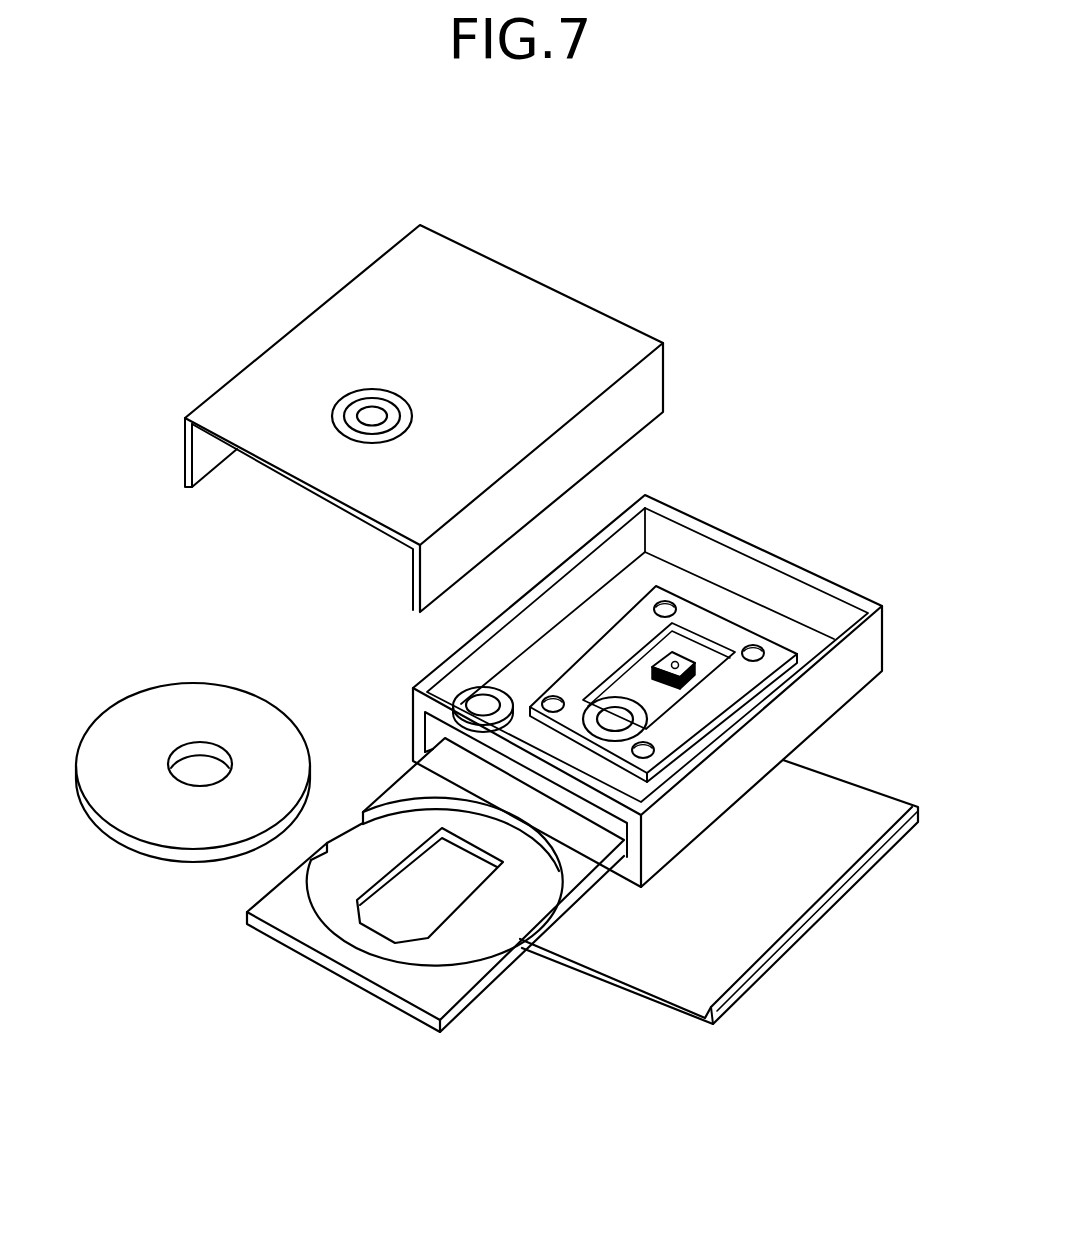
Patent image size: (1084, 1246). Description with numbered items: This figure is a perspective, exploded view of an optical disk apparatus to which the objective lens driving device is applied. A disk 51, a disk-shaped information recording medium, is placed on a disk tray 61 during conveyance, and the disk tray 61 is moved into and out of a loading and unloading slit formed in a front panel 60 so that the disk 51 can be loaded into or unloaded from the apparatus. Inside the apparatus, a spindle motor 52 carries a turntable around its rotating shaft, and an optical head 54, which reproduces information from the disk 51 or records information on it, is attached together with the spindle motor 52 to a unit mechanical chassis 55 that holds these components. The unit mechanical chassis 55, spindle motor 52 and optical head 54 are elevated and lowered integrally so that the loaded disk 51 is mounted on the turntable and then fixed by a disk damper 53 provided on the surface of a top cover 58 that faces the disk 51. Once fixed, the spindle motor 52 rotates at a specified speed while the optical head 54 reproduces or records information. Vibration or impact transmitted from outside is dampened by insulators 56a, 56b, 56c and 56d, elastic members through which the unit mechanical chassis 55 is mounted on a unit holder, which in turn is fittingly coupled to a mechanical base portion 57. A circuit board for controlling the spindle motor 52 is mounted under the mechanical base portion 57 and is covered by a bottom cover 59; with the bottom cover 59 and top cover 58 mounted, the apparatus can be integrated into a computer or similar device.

The disk 51 is at (191, 713).
The spindle motor 52 is at (607, 738).
The disk damper 53 is at (369, 402).
The optical head 54 is at (687, 660).
The unit mechanical chassis 55 is at (727, 677).
The insulator 56a is at (655, 757).
The insulator 56b is at (553, 696).
The insulator 56c is at (665, 601).
The insulator 56d is at (763, 651).
The mechanical base portion 57 is at (720, 600).
The top cover 58 is at (529, 330).
The bottom cover 59 is at (768, 890).
The front panel 60 is at (625, 867).
The disk tray 61 is at (362, 933).